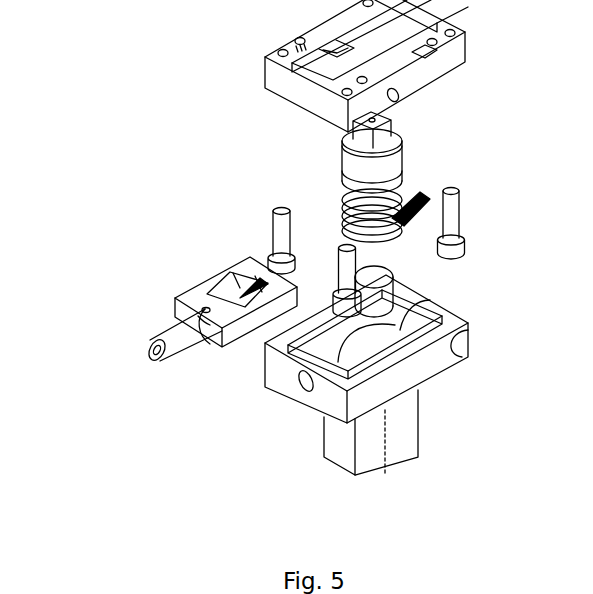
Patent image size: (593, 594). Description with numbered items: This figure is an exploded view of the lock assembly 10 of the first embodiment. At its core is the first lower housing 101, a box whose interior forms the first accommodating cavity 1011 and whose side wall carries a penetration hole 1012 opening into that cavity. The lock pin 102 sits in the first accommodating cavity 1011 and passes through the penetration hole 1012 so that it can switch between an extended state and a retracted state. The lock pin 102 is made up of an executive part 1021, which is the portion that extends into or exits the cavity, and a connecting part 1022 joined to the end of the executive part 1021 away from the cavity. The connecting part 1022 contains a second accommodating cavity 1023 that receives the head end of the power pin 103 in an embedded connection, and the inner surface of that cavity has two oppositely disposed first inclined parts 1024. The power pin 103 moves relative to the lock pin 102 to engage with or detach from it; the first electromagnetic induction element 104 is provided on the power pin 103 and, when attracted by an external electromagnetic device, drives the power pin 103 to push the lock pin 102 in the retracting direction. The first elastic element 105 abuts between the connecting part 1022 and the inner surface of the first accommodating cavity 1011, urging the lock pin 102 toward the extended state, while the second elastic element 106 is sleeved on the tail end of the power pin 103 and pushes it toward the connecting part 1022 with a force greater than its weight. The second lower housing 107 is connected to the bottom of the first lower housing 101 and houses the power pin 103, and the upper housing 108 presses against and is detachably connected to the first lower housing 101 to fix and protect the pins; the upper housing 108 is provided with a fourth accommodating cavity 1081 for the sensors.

The lock assembly 10 is at (573, 506).
The first lower housing 101 is at (468, 330).
The first accommodating cavity 1011 is at (452, 310).
The penetration hole 1012 is at (317, 396).
The lock pin 102 is at (65, 243).
The executive part 1021 is at (162, 337).
The connecting part 1022 is at (198, 300).
The second accommodating cavity 1023 is at (207, 343).
The first inclined part 1024 is at (228, 268).
The power pin 103 is at (403, 143).
The first electromagnetic induction element 104 is at (395, 270).
The first elastic element 105 is at (425, 193).
The second elastic element 106 is at (340, 227).
The second lower housing 107 is at (405, 440).
The upper housing 108 is at (466, 33).
The fourth accommodating cavity 1081 is at (322, 70).